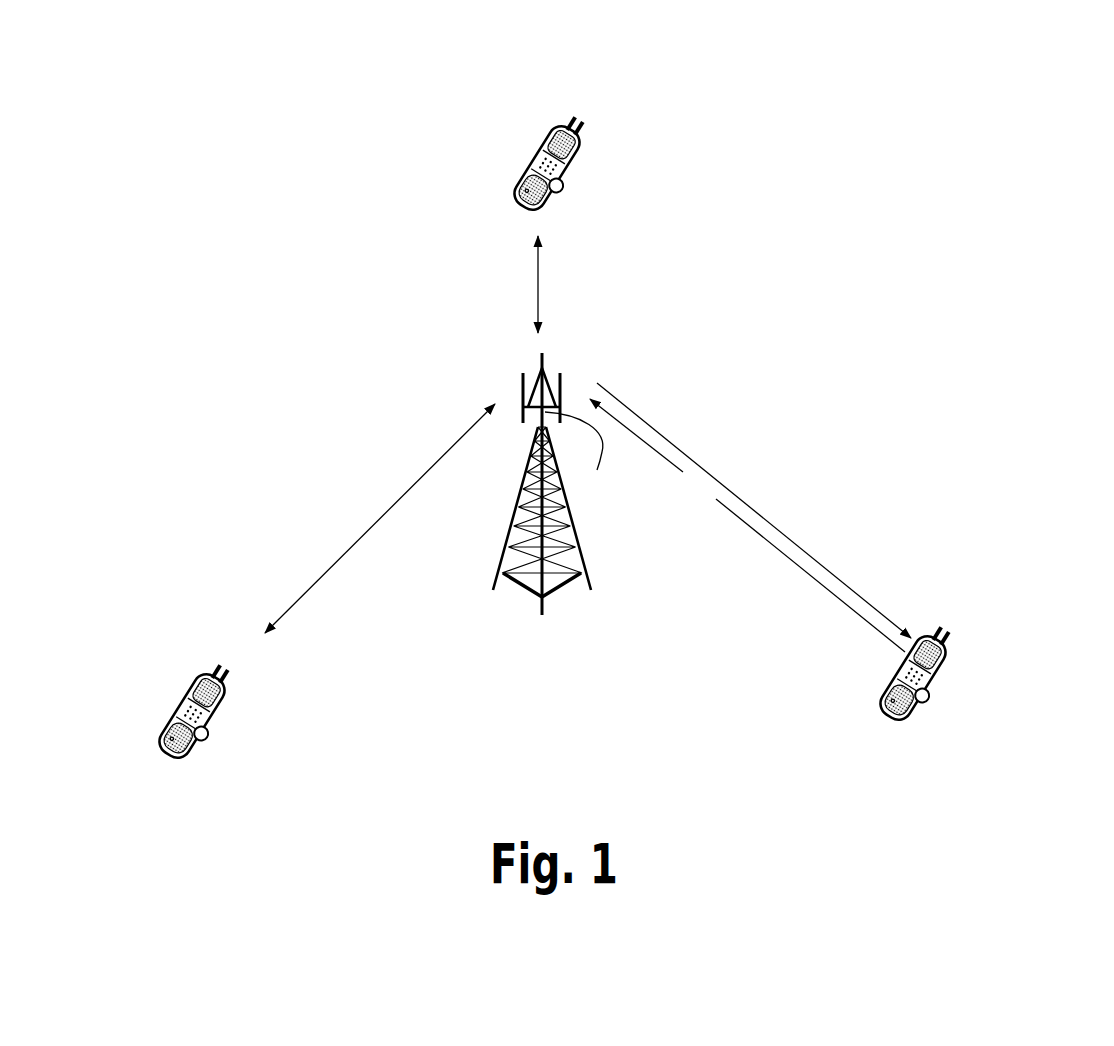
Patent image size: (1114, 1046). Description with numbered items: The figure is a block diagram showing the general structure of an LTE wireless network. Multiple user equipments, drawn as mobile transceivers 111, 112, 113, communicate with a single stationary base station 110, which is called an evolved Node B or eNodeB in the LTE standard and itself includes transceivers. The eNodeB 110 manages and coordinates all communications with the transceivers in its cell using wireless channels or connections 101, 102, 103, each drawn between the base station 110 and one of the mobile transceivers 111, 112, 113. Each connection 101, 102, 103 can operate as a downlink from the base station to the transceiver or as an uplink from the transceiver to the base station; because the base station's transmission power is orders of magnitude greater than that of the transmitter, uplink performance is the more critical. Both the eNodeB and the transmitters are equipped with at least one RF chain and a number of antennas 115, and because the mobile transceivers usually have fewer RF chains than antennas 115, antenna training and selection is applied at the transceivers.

The wireless connection 101 is at (538, 297).
The wireless connection 102 is at (805, 550).
The wireless connection 103 is at (410, 483).
The base station 110 is at (575, 592).
The mobile transceiver 111 is at (602, 130).
The mobile transceiver 112 is at (953, 683).
The mobile transceiver 113 is at (173, 718).
The antennas 115 is at (587, 103).